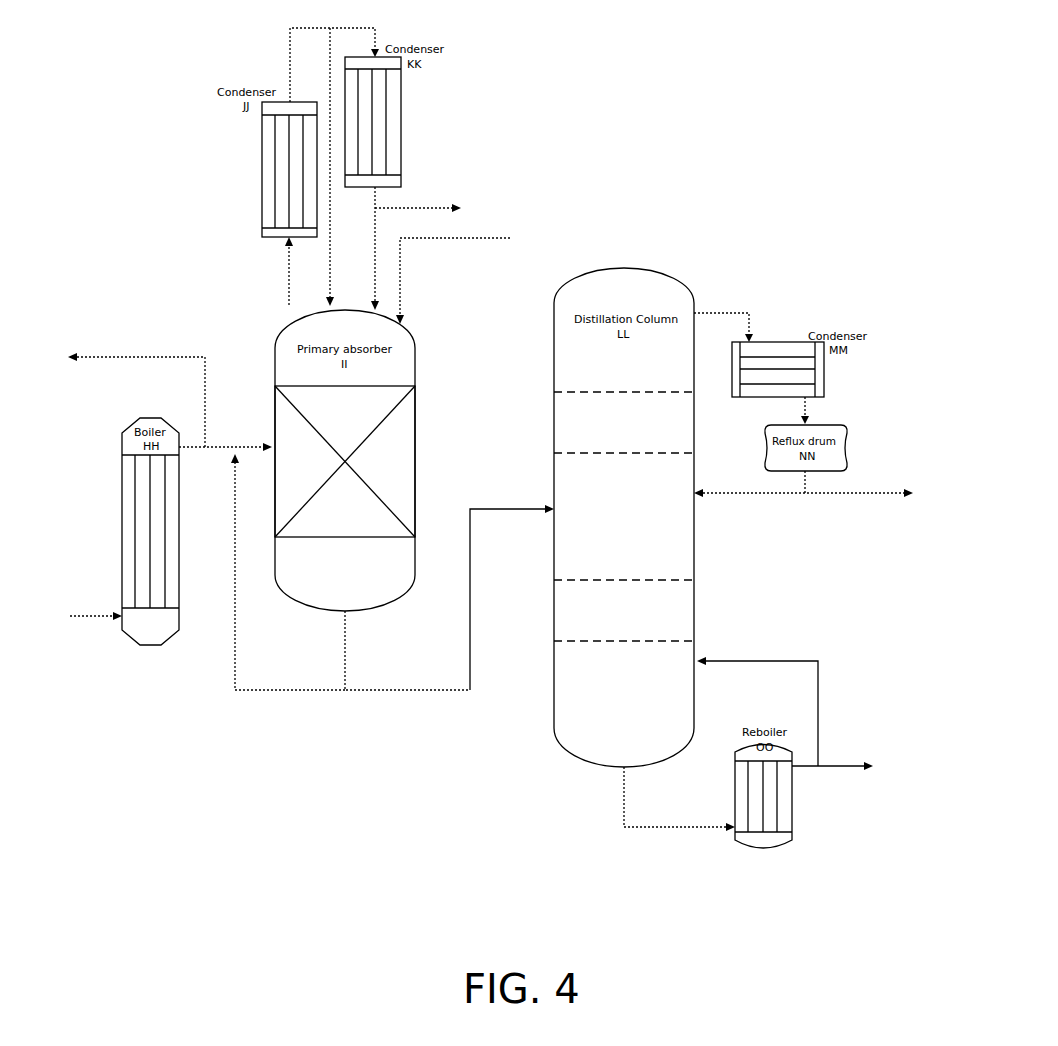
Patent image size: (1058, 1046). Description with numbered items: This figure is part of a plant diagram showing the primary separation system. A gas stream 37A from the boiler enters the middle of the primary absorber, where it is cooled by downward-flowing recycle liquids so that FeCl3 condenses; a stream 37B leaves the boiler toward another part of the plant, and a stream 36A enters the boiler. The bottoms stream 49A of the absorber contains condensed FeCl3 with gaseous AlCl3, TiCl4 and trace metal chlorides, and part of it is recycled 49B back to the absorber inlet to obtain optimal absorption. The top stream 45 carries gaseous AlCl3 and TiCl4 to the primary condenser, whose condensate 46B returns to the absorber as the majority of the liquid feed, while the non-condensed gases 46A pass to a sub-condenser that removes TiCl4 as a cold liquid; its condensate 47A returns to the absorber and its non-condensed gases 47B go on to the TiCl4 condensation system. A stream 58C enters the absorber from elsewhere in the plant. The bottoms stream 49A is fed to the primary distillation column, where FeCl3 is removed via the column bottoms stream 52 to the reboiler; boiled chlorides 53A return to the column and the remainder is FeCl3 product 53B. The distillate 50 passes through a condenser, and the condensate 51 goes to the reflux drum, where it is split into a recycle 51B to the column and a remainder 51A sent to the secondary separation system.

The feed stream to boiler HH from Fig. 3 36A is at (76, 605).
The gas stream 37A is at (225, 439).
The stream to Fig. 3 from boiler HH 37B is at (117, 394).
The top stream 45 is at (279, 271).
The non-condensed gases 46A is at (334, 57).
The condensate 46B is at (320, 167).
The condensate 47A is at (363, 248).
The non-condensed gases 47B is at (438, 203).
The bottoms stream 49A is at (449, 597).
The recycled heavy key stream 49B is at (288, 572).
The distillate 50 is at (729, 313).
The condensate 51 is at (797, 410).
The remainder stream 51A is at (877, 493).
The recycle stream 51B is at (749, 502).
The bottoms stream 52 is at (679, 807).
The boiled chlorides 53A is at (757, 705).
The FeCl3 product 53B is at (859, 763).
The stream from Fig. 5 to primary absorber II 58C is at (473, 277).